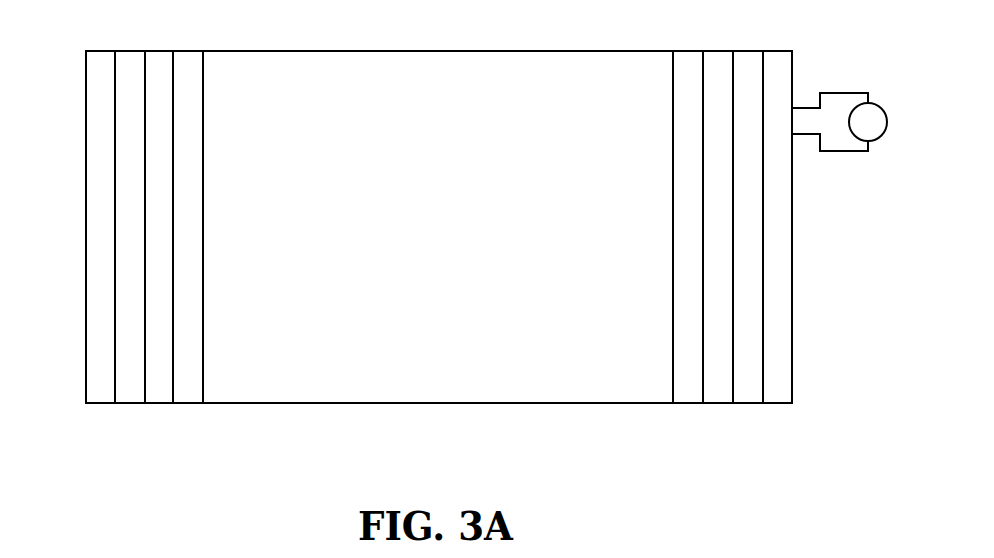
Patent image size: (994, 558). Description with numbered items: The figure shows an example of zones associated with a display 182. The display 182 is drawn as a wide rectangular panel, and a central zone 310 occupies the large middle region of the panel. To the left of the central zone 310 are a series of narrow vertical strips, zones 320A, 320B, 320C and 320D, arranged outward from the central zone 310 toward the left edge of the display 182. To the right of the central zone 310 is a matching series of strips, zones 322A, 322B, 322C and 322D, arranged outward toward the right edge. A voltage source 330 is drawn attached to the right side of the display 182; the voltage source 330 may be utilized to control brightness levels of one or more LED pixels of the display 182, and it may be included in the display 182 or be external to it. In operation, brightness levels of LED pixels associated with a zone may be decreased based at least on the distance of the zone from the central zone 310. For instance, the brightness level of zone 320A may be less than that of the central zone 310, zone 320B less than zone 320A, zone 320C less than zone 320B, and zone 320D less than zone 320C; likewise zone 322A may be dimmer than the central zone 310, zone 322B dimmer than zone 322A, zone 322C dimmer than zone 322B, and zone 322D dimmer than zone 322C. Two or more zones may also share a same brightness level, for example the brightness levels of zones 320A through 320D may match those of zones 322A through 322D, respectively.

The display 182 is at (440, 51).
The central zone 310 is at (454, 252).
The zone 320A is at (186, 404).
The zone 320B is at (158, 404).
The zone 320C is at (128, 404).
The zone 320D is at (100, 404).
The zone 322A is at (688, 404).
The zone 322B is at (718, 404).
The zone 322C is at (747, 404).
The zone 322D is at (777, 404).
The voltage source 330 is at (888, 122).